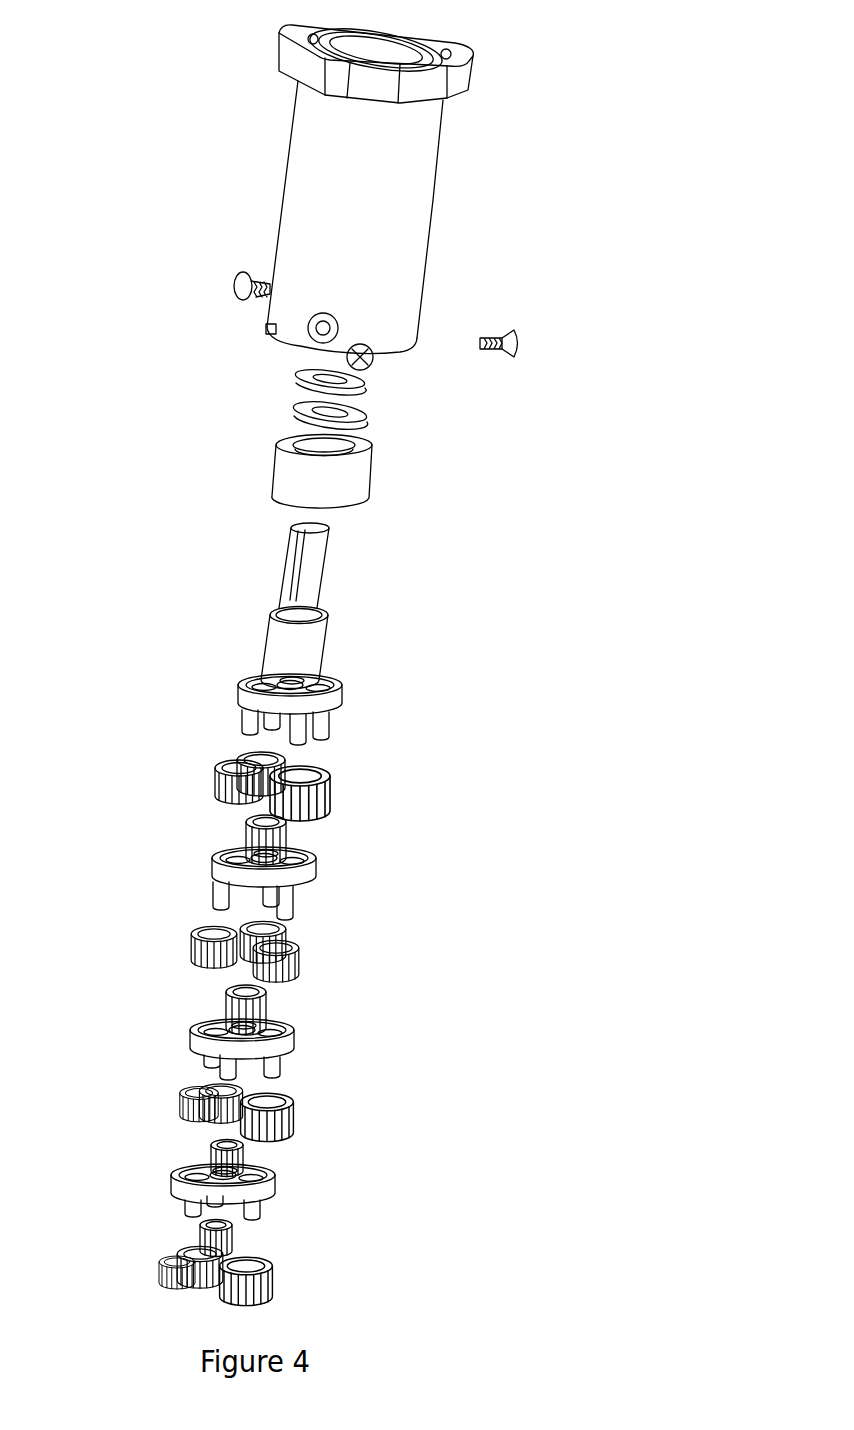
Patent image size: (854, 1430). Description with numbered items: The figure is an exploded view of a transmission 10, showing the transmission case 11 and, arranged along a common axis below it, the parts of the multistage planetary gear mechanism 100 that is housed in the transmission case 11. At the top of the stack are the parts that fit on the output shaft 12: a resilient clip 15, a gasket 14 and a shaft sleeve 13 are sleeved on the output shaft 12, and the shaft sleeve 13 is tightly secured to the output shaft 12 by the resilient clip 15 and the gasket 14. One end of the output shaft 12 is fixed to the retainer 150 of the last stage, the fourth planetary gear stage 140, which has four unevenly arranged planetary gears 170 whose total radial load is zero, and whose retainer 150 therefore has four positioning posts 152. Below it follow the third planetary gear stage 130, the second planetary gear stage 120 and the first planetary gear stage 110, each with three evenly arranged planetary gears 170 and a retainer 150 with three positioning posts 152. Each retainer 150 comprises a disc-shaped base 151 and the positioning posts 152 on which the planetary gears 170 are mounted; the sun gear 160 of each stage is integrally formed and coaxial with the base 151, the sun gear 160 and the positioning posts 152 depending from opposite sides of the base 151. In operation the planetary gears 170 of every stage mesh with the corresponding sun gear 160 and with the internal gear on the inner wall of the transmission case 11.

The transmission 10 is at (86, 28).
The transmission case 11 is at (440, 199).
The output shaft 12 is at (327, 574).
The shaft sleeve 13 is at (370, 487).
The gasket 14 is at (368, 414).
The resilient clip 15 is at (359, 385).
The planetary gear mechanism 100 is at (172, 777).
The first planetary gear stage 110 is at (310, 1242).
The second planetary gear stage 120 is at (317, 1088).
The third planetary gear stage 130 is at (345, 926).
The fourth planetary gear stage 140 is at (363, 744).
The retainer 150 is at (342, 694).
The base 151 is at (318, 870).
The positioning posts 152 is at (244, 717).
The sun gear 160 is at (290, 838).
The planetary gears 170 is at (330, 781).